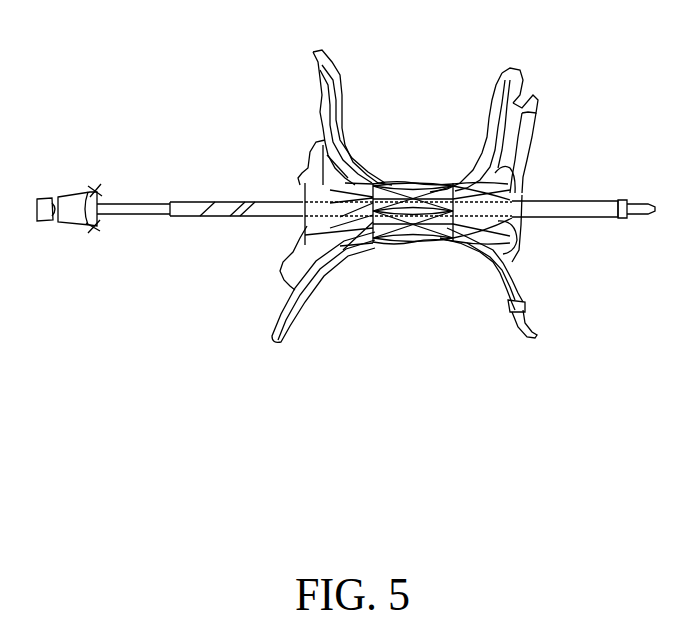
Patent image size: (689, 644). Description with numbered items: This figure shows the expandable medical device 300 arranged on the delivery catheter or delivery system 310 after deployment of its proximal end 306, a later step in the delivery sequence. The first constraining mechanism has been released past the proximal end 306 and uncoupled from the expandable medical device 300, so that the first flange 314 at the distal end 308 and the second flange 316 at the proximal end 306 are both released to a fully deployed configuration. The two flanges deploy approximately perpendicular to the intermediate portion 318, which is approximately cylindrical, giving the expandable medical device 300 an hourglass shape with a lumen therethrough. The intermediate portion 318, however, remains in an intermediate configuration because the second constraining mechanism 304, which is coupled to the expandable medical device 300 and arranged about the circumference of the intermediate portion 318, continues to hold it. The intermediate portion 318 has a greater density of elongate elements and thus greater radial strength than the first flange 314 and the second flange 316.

The expandable medical device 300 is at (204, 335).
The second constraining mechanism 304 is at (455, 249).
The proximal end 306 is at (298, 222).
The distal end 308 is at (512, 216).
The delivery catheter or delivery system 310 is at (138, 210).
The first flange 314 is at (503, 73).
The second flange 316 is at (339, 74).
The intermediate portion 318 is at (392, 237).